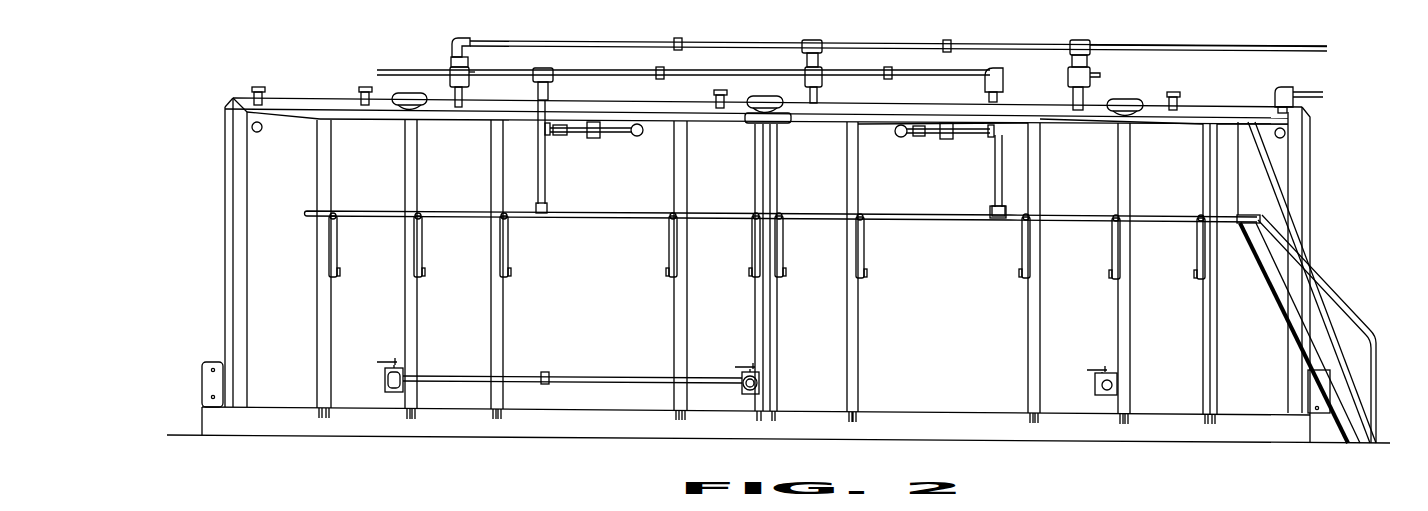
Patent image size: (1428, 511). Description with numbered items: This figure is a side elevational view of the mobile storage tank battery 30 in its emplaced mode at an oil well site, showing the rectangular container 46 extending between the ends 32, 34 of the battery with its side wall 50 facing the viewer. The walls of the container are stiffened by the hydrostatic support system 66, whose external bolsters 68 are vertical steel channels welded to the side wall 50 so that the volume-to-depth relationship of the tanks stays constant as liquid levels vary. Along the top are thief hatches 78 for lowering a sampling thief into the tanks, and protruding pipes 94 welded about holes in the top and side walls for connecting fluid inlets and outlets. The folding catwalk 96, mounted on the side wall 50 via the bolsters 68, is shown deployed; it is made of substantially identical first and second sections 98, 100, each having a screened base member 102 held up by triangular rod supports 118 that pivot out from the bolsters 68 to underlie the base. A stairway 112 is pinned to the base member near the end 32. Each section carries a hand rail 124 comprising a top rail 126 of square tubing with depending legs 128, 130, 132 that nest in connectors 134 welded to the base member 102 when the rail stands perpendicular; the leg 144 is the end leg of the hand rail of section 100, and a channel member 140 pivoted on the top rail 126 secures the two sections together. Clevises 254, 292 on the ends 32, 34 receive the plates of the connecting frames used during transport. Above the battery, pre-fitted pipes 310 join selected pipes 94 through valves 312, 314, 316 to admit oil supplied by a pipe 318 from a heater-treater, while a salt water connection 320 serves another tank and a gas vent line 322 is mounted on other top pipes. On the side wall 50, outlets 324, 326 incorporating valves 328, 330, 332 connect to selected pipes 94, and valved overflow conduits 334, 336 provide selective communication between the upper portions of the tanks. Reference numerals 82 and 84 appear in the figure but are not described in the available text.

The mobile storage tank battery 30 is at (1350, 94).
The end of the tank battery 32 is at (1318, 186).
The end of the tank battery 34 is at (222, 190).
The rectangular container 46 is at (1213, 106).
The side wall 50 is at (948, 331).
The hydrostatic support system 66 is at (1220, 318).
The external bolsters 68 is at (497, 326).
The thief hatches 78 is at (405, 92).
The base 82 is at (475, 440).
The base rail 84 is at (985, 436).
The protruding pipes 94 is at (358, 92).
The folding catwalk 96 is at (372, 208).
The first section of the catwalk 98 is at (1065, 225).
The second section of the catwalk 100 is at (565, 218).
The base member 102 is at (910, 212).
The stairway 112 is at (1313, 352).
The supports 118 is at (340, 255).
The hand rail 124 is at (1028, 115).
The top rail 126 is at (965, 118).
The leg of the hand rail 128 is at (1215, 177).
The leg of the hand rail 130 is at (996, 166).
The leg of the hand rail 132 is at (780, 170).
The connectors 134 is at (995, 216).
The channel member 140 is at (755, 119).
The leg of the hand rail 144 is at (318, 146).
The clevis 254 is at (1320, 398).
The clevis 292 is at (212, 382).
The pre-fitted pipes 310 is at (850, 46).
The valve 312 is at (452, 60).
The valve 314 is at (810, 72).
The valve 316 is at (1090, 72).
The pipe 318 is at (1232, 50).
The salt water connection 320 is at (1302, 84).
The gas vent line 322 is at (585, 72).
The outlet 324 is at (580, 380).
The outlet 326 is at (1117, 385).
The valve 328 is at (393, 393).
The valve 330 is at (752, 386).
The valve 332 is at (1095, 390).
The valved overflow conduit 334 is at (628, 134).
The valved overflow conduit 336 is at (935, 136).